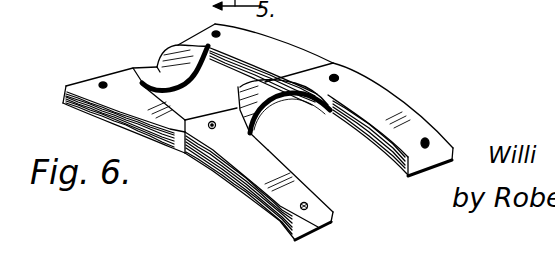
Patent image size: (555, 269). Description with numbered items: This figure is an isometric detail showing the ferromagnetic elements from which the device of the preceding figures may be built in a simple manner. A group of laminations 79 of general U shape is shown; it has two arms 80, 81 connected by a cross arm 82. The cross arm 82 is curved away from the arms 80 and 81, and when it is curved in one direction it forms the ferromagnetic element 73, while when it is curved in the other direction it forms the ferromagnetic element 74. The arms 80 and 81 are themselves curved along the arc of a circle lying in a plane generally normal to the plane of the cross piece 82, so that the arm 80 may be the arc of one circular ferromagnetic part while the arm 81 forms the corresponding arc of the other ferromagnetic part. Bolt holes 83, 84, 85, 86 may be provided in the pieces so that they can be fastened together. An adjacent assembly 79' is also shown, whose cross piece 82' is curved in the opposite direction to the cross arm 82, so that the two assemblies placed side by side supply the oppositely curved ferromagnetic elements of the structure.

The ferromagnetic element 74 is at (126, 68).
The cross piece 82' is at (175, 52).
The adjacent assembly 79' is at (255, 58).
The bolt hole 85 is at (334, 74).
The group of laminations 79 is at (390, 109).
The arm 80 is at (401, 98).
The bolt hole 86 is at (431, 139).
The cross arm 82 is at (233, 103).
The ferromagnetic element 73 is at (273, 115).
The arm 81 is at (313, 184).
The bolt hole 83 is at (308, 208).
The bolt hole 84 is at (212, 129).